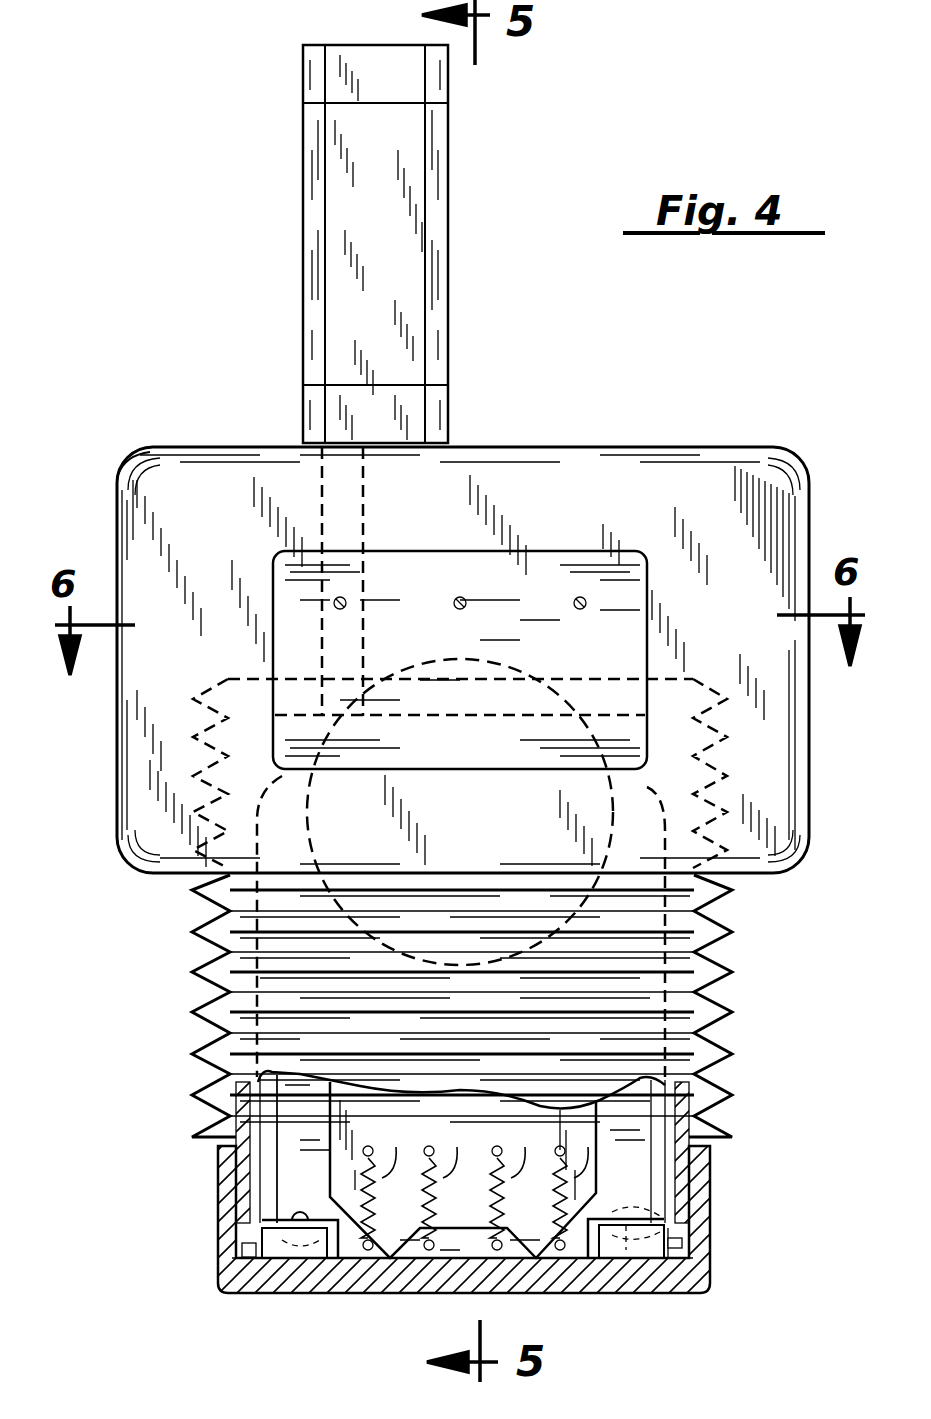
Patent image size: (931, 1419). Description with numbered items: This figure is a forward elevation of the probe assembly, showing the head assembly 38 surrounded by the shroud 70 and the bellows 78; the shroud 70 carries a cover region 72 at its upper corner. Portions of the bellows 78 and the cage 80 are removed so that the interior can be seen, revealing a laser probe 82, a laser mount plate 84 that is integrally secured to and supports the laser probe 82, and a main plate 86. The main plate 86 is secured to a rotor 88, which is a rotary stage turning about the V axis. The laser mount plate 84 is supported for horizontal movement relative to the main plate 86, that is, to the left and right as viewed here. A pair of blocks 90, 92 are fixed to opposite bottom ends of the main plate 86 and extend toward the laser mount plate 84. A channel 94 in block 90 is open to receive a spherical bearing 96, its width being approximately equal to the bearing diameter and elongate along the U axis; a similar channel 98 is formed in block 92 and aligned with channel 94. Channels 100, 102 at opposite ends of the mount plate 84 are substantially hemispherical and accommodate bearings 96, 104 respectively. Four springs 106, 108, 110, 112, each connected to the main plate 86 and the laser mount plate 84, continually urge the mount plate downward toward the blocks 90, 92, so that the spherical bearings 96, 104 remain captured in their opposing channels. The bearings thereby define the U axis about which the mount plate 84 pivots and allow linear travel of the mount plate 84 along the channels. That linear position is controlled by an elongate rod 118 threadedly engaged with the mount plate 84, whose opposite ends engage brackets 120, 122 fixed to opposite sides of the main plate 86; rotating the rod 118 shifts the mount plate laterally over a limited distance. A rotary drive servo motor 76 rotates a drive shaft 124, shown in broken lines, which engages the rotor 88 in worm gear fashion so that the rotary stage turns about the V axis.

The head assembly 38 is at (590, 378).
The shroud 70 is at (775, 447).
The head cover 72 is at (161, 471).
The rotary drive servo motor 76 is at (413, 202).
The bellows 78 is at (713, 1002).
The cage 80 is at (702, 1195).
The laser probe 82 is at (460, 1100).
The laser mount plate 84 is at (310, 1158).
The main plate 86 is at (650, 787).
The rotor 88 is at (312, 843).
The block 90 is at (283, 1258).
The block 92 is at (653, 1256).
The channel 94 is at (302, 1247).
The spherical bearing 96 is at (232, 1236).
The channel 98 is at (630, 1252).
The channel 100 is at (302, 1214).
The channel 102 is at (626, 1212).
The spherical bearing 104 is at (675, 1214).
The spring 106 is at (390, 1185).
The spring 108 is at (451, 1185).
The spring 110 is at (516, 1185).
The spring 112 is at (578, 1185).
The elongate rod 118 is at (252, 1258).
The bracket 120 is at (217, 1200).
The bracket 122 is at (678, 1232).
The drive shaft 124 is at (366, 523).